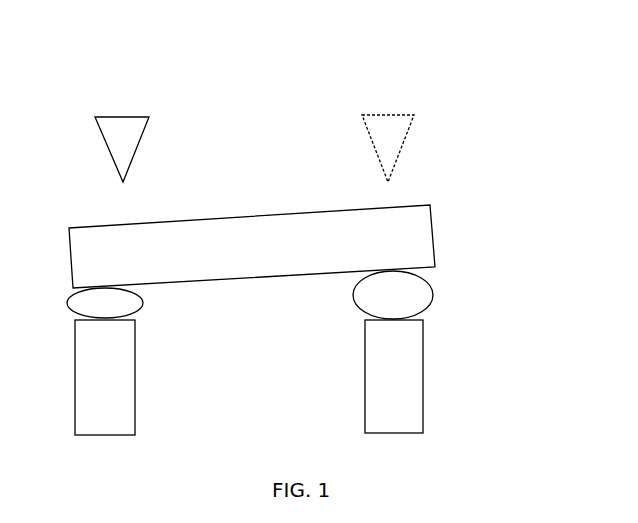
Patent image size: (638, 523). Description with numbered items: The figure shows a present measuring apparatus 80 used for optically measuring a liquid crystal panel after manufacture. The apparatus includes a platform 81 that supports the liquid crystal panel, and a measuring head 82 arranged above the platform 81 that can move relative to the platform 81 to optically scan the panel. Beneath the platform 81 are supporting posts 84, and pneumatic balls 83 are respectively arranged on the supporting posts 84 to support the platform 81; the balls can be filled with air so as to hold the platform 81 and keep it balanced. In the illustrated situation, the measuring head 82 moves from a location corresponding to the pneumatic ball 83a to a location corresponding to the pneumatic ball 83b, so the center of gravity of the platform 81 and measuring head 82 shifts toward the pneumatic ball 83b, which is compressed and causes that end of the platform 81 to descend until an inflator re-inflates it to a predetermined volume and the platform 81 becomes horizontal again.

The measuring apparatus 80 is at (269, 46).
The platform 81 is at (422, 250).
The measuring head 82 is at (115, 128).
The pneumatic balls 83 is at (250, 337).
The pneumatic ball 83a is at (373, 302).
The pneumatic ball 83b is at (119, 304).
The supporting posts 84 is at (109, 423).